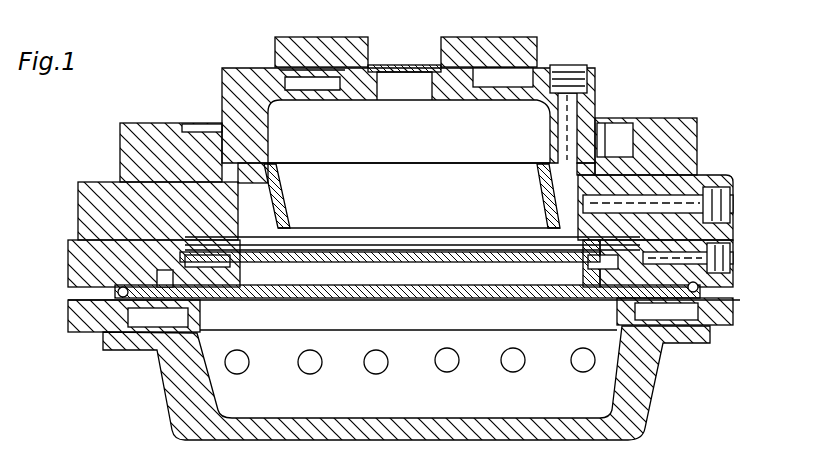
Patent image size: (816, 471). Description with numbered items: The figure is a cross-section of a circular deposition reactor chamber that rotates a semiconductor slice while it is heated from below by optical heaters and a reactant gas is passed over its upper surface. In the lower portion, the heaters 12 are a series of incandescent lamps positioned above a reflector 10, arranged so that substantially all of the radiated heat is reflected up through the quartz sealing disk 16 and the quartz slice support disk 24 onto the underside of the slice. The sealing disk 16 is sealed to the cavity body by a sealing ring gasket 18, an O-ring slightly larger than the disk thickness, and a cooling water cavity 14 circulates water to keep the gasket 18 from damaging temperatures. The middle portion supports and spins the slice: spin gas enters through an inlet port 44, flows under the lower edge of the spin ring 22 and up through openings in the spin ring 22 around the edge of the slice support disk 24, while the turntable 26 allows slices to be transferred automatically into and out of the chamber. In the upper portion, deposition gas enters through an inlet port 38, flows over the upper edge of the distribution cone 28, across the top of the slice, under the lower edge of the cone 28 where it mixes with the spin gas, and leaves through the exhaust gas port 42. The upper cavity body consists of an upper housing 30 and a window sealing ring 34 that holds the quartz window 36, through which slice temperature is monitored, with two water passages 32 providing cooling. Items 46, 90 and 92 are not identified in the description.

The reflector 10 is at (597, 438).
The optical heaters 12 is at (507, 372).
The cooling water cavity 14 is at (678, 313).
The sealing disk 16 is at (347, 290).
The sealing ring gasket 18 is at (82, 335).
The spin ring 22 is at (612, 290).
The slice support disk 24 is at (463, 292).
The turntable 26 is at (269, 287).
The distribution cone 28 is at (278, 168).
The upper housing 30 is at (248, 76).
The water passages 32 is at (522, 78).
The window sealing ring 34 is at (455, 42).
The window 36 is at (400, 66).
The inlet port 38 is at (572, 68).
The exhaust gas port 42 is at (731, 210).
The inlet port 44 is at (731, 268).
The pin 46 is at (612, 157).
The lead 90 is at (205, 470).
The lead 92 is at (283, 470).